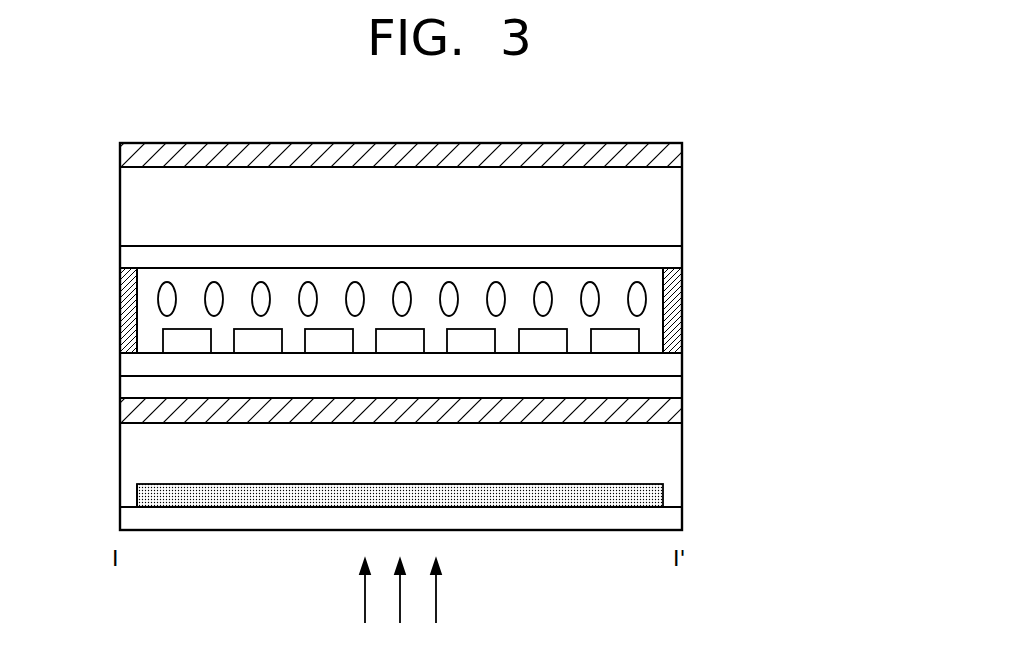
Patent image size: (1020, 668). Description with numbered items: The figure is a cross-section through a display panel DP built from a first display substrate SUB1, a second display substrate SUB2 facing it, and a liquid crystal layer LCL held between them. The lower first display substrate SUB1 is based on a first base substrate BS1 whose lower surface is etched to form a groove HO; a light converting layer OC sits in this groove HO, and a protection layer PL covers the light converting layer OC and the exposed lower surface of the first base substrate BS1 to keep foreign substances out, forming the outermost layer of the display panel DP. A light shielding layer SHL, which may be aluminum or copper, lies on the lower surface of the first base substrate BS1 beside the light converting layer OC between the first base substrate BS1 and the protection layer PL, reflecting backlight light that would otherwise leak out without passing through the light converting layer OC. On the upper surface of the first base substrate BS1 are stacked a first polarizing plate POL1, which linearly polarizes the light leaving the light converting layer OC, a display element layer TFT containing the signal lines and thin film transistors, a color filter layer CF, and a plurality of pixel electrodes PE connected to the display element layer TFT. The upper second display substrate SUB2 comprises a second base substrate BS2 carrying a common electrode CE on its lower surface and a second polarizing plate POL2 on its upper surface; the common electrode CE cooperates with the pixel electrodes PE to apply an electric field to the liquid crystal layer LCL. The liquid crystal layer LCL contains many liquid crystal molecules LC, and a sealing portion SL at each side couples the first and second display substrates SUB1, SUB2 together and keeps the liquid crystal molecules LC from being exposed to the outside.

The second polarizing plate POL2 is at (672, 152).
The second base substrate BS2 is at (673, 205).
The common electrode CE is at (673, 257).
The second display substrate SUB2 is at (481, 206).
The sealing portion SL is at (675, 282).
The liquid crystal layer LCL is at (405, 312).
The liquid crystal molecules LC is at (165, 300).
The pixel electrode PE is at (633, 340).
The color filter layer CF is at (673, 364).
The display element layer TFT is at (672, 387).
The first polarizing plate POL1 is at (672, 411).
The first base substrate BS1 is at (672, 466).
The light converting layer OC is at (655, 496).
The protection layer PL is at (672, 519).
The first display substrate SUB1 is at (447, 464).
The light shielding layer SHL is at (128, 497).
The groove HO is at (146, 488).
The display panel DP is at (474, 371).